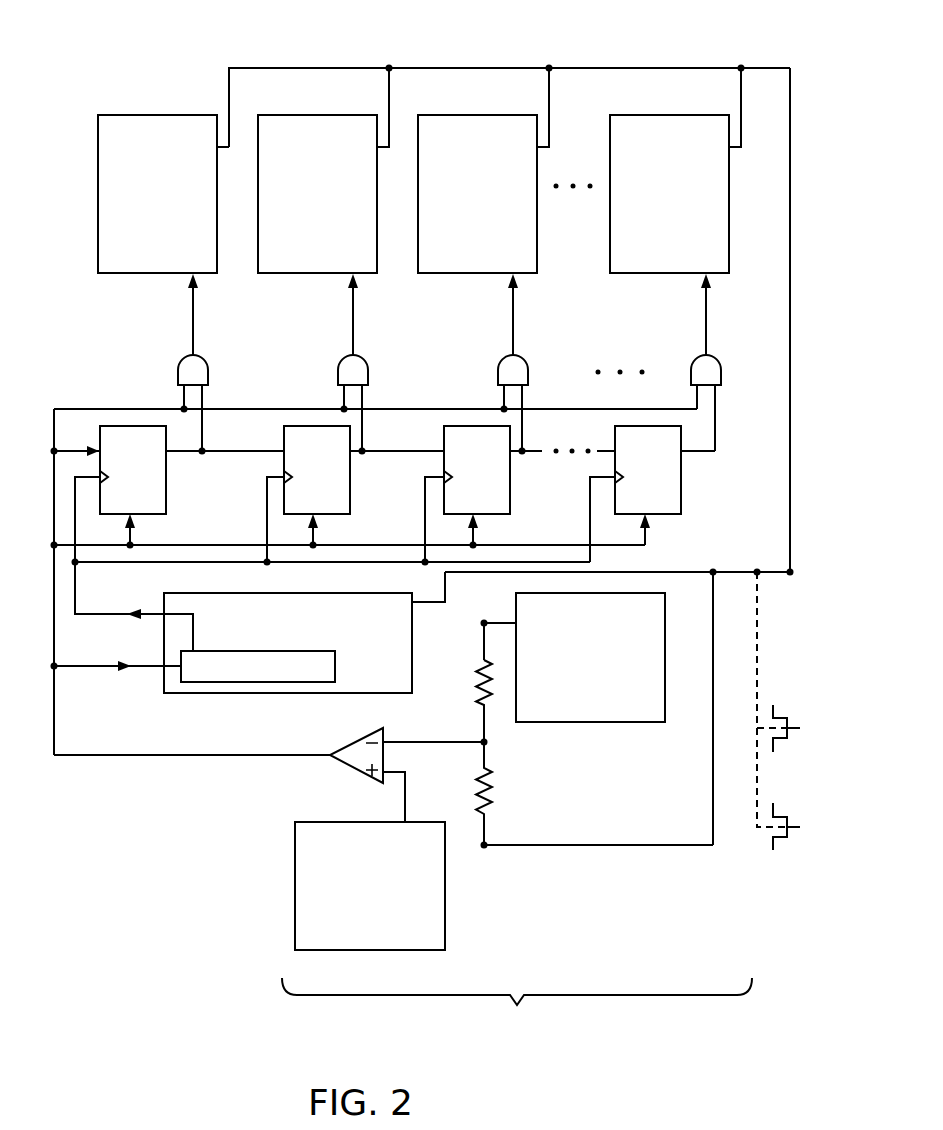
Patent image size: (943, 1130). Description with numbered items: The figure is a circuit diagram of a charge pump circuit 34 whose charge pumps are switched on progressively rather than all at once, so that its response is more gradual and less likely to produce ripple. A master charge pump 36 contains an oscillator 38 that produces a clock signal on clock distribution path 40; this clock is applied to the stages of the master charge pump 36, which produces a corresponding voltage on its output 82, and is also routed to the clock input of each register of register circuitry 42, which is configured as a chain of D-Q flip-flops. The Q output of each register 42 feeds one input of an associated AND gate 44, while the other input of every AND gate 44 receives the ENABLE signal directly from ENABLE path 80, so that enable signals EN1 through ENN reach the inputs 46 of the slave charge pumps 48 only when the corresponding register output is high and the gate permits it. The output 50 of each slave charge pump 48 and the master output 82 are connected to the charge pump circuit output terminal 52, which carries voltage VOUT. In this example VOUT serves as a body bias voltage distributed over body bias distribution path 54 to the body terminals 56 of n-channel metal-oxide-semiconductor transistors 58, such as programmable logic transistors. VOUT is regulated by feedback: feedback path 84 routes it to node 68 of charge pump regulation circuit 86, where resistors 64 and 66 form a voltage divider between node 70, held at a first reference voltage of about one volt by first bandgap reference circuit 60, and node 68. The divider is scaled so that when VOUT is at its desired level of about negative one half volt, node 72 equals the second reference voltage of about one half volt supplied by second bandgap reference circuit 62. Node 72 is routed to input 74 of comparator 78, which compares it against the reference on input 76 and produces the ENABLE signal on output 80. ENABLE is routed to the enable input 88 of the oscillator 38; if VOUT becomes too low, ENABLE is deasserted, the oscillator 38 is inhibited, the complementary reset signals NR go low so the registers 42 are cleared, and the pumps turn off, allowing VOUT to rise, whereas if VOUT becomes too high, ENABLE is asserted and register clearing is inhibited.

The charge pump circuit 34 is at (83, 49).
The master charge pump 36 is at (412, 677).
The oscillator 38 is at (295, 682).
The clock distribution path 40 is at (197, 562).
The register circuitry 42 is at (166, 462).
The AND gates 44 is at (208, 374).
The slave charge pump inputs 46 is at (191, 305).
The slave charge pumps 48 is at (142, 115).
The slave charge pump output 50 is at (231, 136).
The charge pump circuit output terminal 52 is at (792, 570).
The body bias distribution path 54 is at (758, 680).
The body terminals 56 is at (767, 738).
The n-channel metal-oxide-semiconductor transistors 58 is at (816, 738).
The first bandgap reference circuit 60 is at (640, 722).
The second bandgap reference circuit 62 is at (382, 950).
The resistor 64 is at (457, 679).
The resistor 66 is at (467, 826).
The node 68 is at (487, 840).
The node 70 is at (484, 621).
The node 72 is at (482, 746).
The comparator input 74 is at (410, 742).
The comparator input 76 is at (393, 770).
The comparator 78 is at (349, 776).
The ENABLE path 80 is at (93, 758).
The master charge pump output 82 is at (423, 602).
The feedback path 84 is at (665, 845).
The charge pump regulation circuit 86 is at (517, 1006).
The oscillator enable input 88 is at (155, 668).